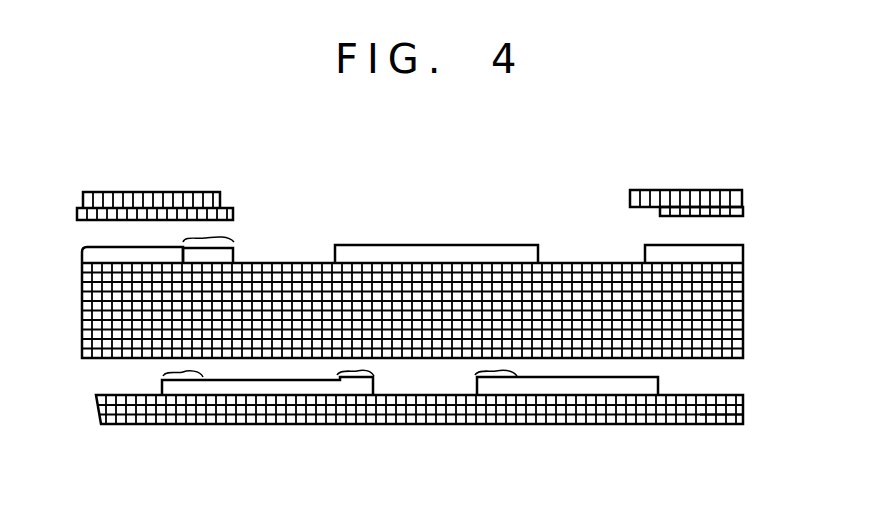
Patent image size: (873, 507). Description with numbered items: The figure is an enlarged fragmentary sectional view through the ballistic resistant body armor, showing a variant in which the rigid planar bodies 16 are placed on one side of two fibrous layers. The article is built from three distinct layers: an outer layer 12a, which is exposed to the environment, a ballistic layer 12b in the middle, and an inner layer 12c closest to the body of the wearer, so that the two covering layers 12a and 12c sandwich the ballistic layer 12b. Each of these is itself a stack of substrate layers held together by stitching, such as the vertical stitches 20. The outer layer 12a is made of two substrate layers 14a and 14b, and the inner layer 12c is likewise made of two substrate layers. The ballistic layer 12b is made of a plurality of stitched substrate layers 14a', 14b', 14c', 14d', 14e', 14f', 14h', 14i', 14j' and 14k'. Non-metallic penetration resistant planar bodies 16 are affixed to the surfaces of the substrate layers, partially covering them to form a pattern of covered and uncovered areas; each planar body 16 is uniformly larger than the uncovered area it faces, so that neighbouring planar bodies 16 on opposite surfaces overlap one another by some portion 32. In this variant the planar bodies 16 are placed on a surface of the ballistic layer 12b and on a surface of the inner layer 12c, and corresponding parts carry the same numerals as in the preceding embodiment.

The outer layer 12a is at (82, 204).
The ballistic layer 12b is at (810, 357).
The inner layer 12c is at (822, 378).
The substrate layer 14a is at (716, 191).
The substrate layer 14b is at (731, 209).
The substrate layer 14a' is at (441, 266).
The substrate layer 14b' is at (100, 247).
The substrate layer 14c' is at (750, 280).
The substrate layer 14d' is at (384, 269).
The substrate layer 14e' is at (750, 300).
The substrate layer 14f' is at (382, 290).
The substrate layer 14h' is at (752, 319).
The substrate layer 14i' is at (384, 316).
The substrate layer 14j' is at (749, 339).
The substrate layer 14k' is at (385, 338).
The planar body 16 is at (400, 244).
The vertical stitches 20 is at (673, 190).
The overlap portion 32 is at (206, 237).